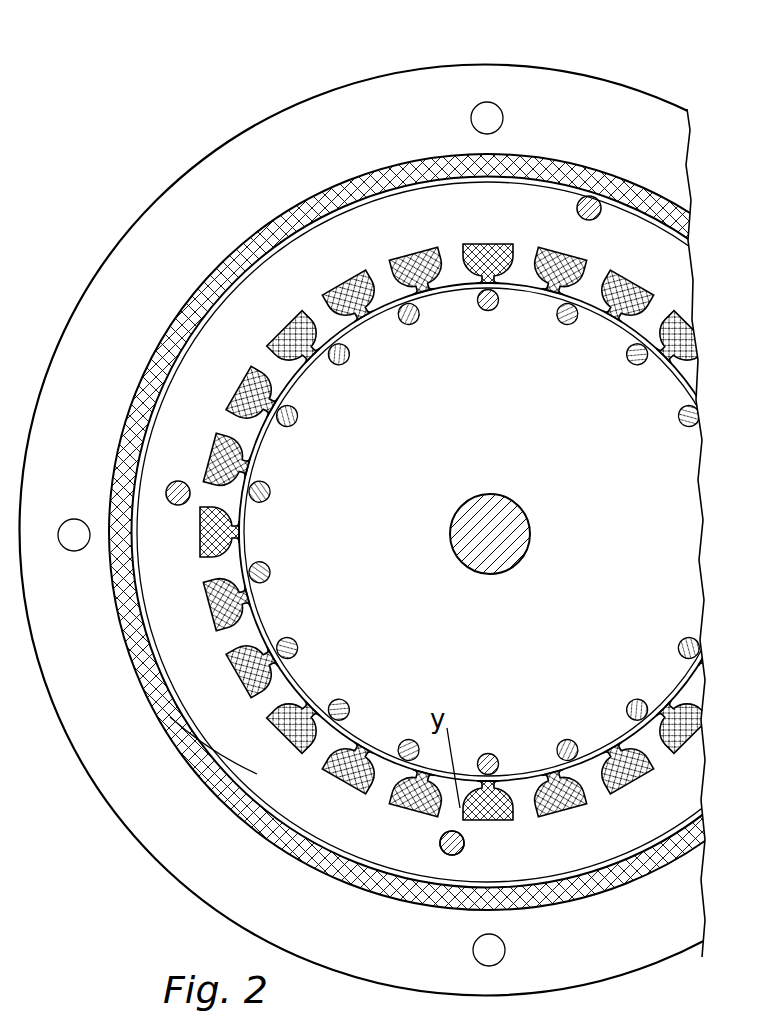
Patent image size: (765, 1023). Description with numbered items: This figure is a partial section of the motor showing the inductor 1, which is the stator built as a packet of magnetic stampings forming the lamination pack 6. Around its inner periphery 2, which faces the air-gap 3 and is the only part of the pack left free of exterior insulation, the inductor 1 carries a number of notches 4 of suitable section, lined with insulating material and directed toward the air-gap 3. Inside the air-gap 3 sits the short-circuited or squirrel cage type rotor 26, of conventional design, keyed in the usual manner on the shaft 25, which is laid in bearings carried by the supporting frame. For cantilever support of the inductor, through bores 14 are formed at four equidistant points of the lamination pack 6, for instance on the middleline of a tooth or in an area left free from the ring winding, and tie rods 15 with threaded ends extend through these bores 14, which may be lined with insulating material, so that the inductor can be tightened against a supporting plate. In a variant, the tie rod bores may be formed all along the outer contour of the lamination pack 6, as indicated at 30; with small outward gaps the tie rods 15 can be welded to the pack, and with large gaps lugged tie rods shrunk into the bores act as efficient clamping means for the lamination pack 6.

The inductor 1 is at (393, 212).
The inner periphery 2 is at (277, 380).
The air-gap 3 is at (323, 327).
The notches 4 is at (250, 420).
The lamination pack 6 is at (273, 787).
The through bores 14 is at (170, 485).
The tie rods 15 is at (445, 852).
The shaft 25 is at (503, 512).
The rotor 26 is at (565, 400).
The tie rod bores along outer contour 30 is at (569, 192).